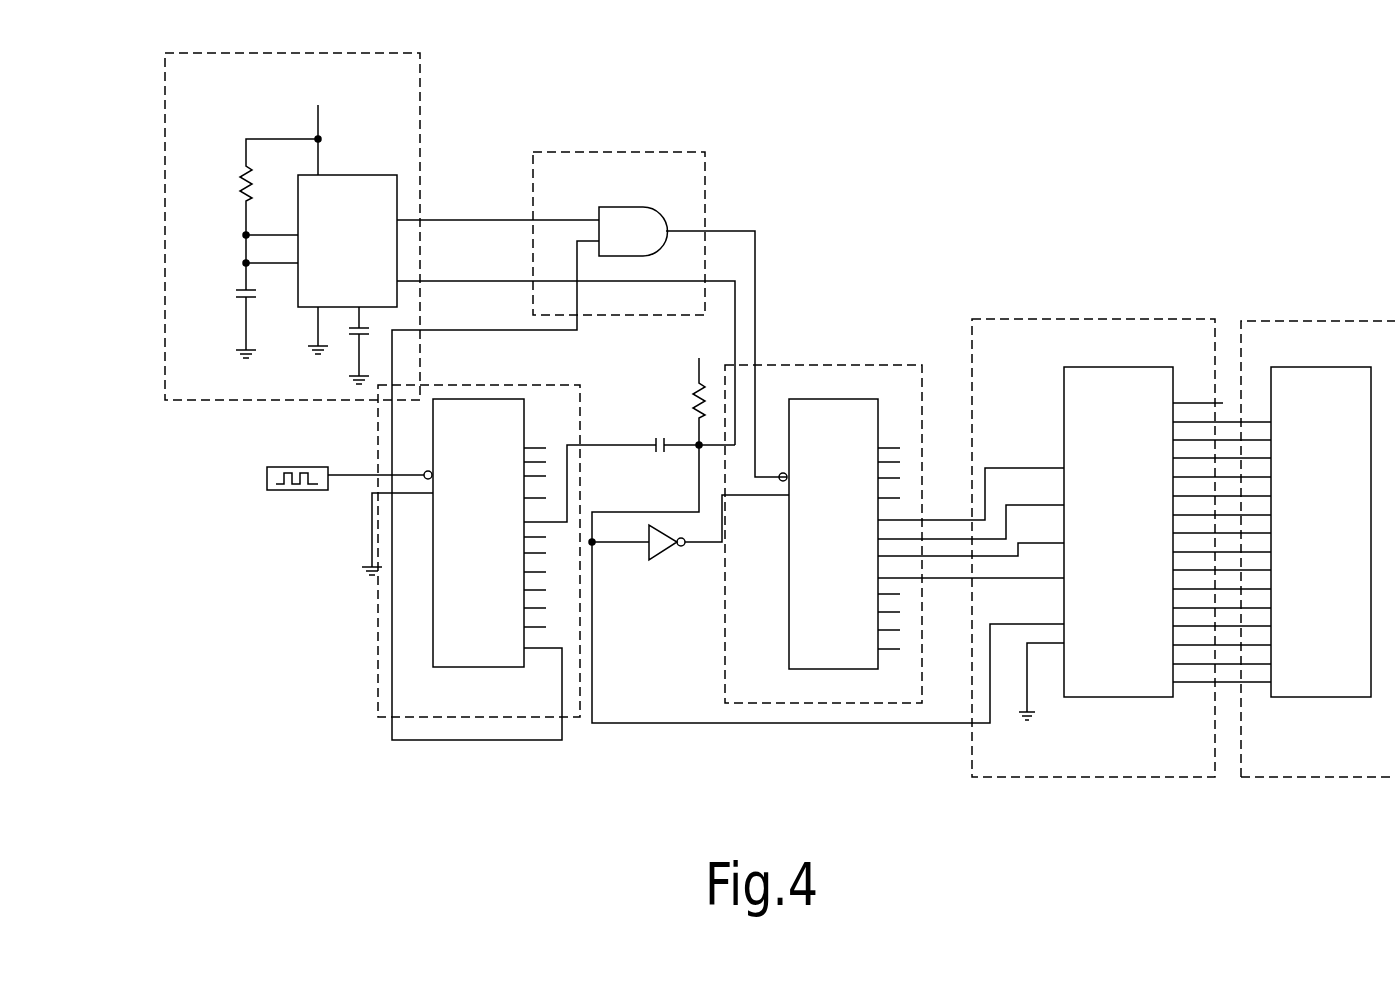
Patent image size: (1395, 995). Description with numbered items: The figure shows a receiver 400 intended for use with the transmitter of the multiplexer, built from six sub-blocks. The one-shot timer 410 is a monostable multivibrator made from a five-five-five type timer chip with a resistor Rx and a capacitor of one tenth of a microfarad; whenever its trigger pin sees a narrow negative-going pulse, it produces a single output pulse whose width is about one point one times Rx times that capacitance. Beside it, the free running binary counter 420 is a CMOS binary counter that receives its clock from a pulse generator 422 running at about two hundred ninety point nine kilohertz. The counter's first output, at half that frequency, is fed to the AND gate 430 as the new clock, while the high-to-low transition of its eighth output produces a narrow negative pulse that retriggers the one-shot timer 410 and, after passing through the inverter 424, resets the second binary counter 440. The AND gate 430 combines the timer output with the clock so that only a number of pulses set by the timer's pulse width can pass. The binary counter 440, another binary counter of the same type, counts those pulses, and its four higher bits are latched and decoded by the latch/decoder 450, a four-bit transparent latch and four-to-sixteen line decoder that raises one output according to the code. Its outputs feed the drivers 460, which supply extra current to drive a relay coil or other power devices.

The receiver 400 is at (896, 754).
The one-shot timer 410 is at (280, 380).
The free running binary counter 420 is at (388, 615).
The pulse generator 422 is at (288, 506).
The inverter 424 is at (668, 571).
The AND gate 430 is at (683, 195).
The binary counter 440 is at (885, 387).
The latch/decoder 450 is at (1108, 347).
The drivers 460 is at (1306, 345).